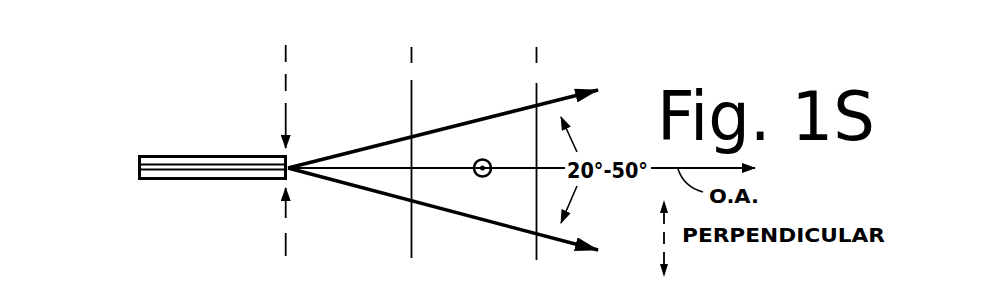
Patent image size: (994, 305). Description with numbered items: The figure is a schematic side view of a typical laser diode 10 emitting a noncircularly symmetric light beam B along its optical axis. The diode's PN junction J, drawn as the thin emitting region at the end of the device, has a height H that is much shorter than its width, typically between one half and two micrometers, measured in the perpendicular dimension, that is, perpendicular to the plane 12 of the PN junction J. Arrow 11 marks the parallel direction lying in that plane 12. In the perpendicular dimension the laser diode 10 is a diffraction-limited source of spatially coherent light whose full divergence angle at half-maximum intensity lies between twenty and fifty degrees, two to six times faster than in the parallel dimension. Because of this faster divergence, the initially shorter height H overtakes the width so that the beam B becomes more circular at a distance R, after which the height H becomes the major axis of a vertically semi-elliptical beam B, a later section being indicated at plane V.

The laser diode 10 is at (115, 140).
The arrow 11 is at (491, 162).
The plane of PN junction 12 is at (131, 167).
The PN junction J is at (305, 147).
The height H is at (270, 232).
The beam B is at (483, 108).
The distance R is at (412, 171).
The reference plane V is at (537, 171).